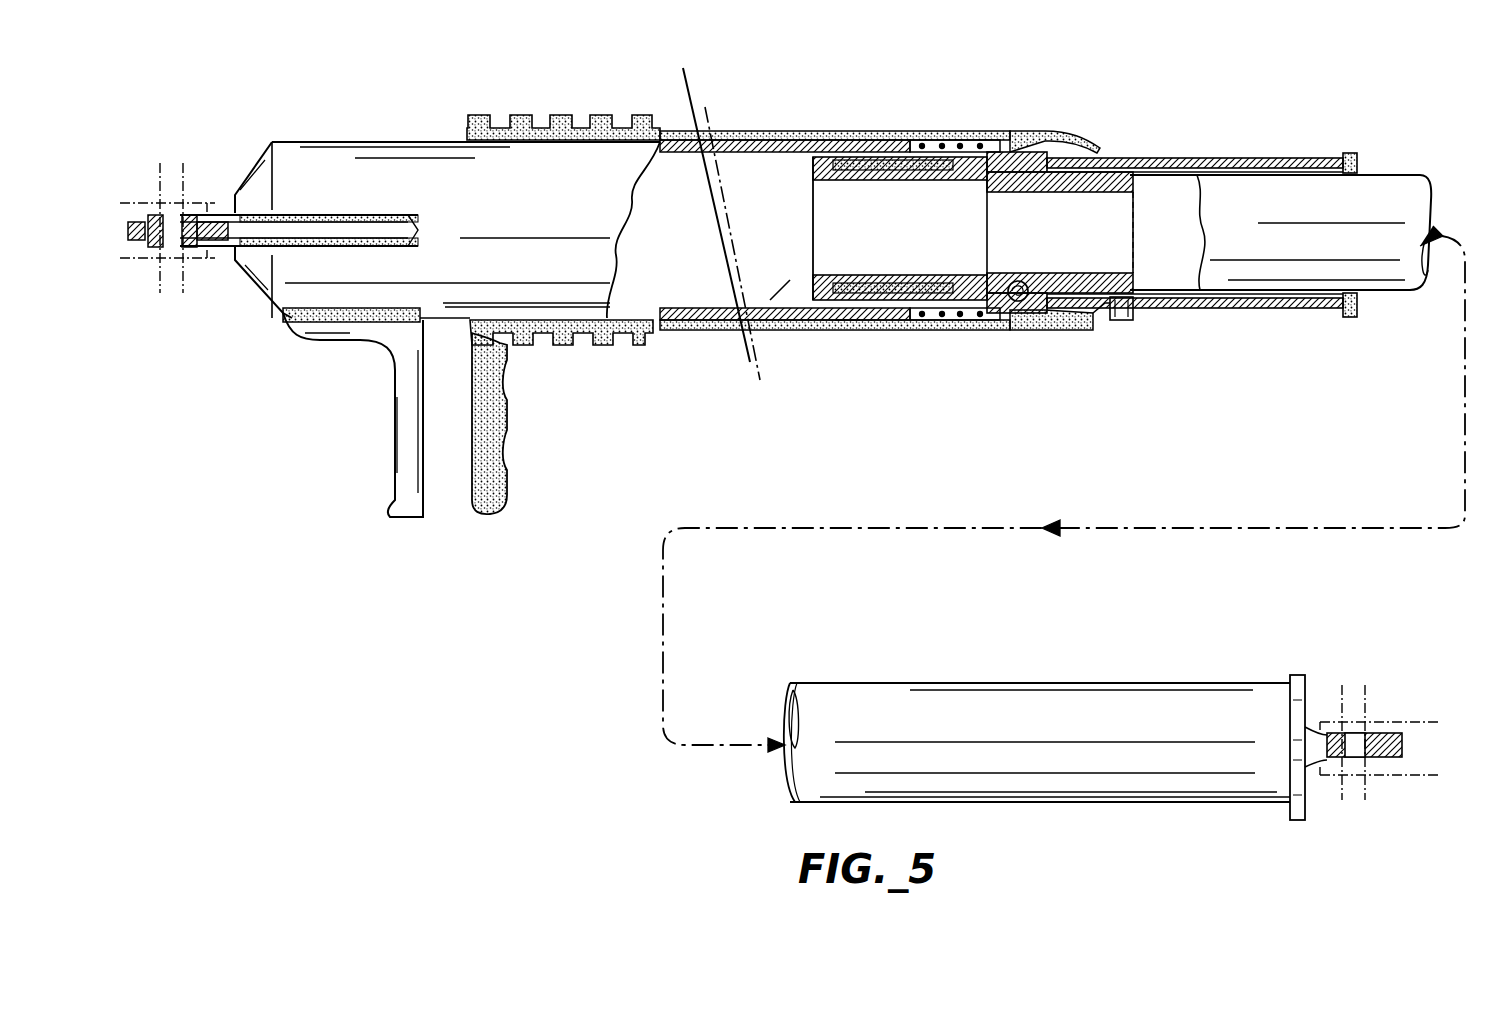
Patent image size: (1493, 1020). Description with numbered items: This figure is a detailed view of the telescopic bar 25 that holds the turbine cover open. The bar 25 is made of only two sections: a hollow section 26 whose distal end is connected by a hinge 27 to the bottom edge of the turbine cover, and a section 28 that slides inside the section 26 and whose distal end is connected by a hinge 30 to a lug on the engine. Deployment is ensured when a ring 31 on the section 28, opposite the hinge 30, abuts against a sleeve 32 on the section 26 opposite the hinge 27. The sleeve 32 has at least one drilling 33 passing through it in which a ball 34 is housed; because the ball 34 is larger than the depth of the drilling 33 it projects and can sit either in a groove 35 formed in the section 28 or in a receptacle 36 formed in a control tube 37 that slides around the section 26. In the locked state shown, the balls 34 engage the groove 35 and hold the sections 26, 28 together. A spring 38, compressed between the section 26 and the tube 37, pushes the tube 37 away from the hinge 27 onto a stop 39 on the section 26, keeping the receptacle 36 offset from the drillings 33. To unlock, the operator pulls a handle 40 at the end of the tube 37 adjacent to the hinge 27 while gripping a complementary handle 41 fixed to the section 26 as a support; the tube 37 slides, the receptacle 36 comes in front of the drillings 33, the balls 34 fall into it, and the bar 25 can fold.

The bar 25 is at (877, 118).
The section 26 is at (1226, 158).
The hinge 27 is at (192, 270).
The section 28 is at (1415, 190).
The hinge 30 is at (1355, 710).
The ring 31 is at (787, 283).
The sleeve 32 is at (842, 325).
The drilling 33 is at (1020, 322).
The ball 34 is at (1002, 312).
The groove 35 is at (1020, 135).
The receptacle 36 is at (1098, 320).
The control tube 37 is at (770, 140).
The spring 38 is at (952, 148).
The stop 39 is at (1140, 312).
The handle 40 is at (495, 492).
The complementary handle 41 is at (405, 478).